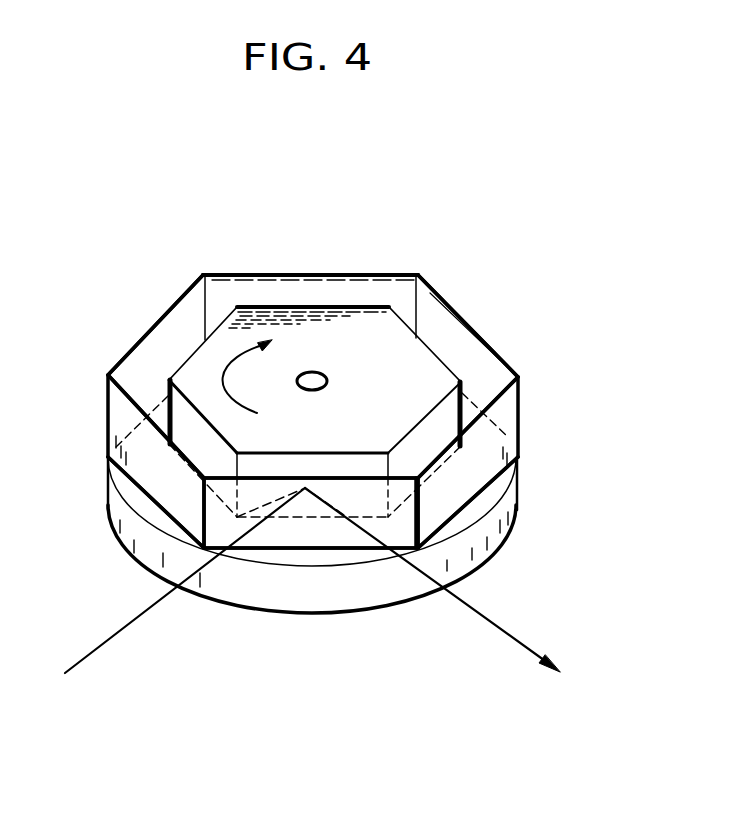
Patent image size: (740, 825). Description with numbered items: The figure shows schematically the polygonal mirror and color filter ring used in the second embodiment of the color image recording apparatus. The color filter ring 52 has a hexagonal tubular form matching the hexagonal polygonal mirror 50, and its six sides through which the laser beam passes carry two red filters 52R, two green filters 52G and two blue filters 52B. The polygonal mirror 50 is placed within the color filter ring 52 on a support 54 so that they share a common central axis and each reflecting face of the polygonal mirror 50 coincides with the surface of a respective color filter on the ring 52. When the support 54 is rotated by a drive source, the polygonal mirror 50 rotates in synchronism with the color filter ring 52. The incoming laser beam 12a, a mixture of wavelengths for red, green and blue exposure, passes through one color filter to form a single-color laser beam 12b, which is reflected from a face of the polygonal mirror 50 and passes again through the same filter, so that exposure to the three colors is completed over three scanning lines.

The color filter ring 52 is at (176, 305).
The green filters 52G is at (384, 285).
The red filters 52R is at (466, 320).
The blue filters 52B is at (137, 368).
The polygonal mirror 50 is at (436, 374).
The support 54 is at (508, 513).
The laser beam 12a is at (140, 618).
The laser beam 12b is at (503, 633).